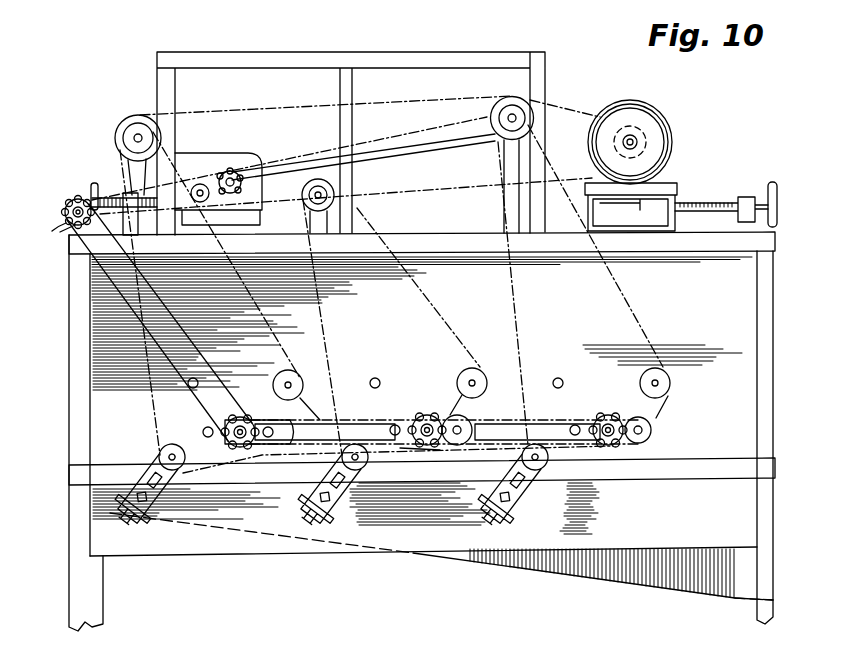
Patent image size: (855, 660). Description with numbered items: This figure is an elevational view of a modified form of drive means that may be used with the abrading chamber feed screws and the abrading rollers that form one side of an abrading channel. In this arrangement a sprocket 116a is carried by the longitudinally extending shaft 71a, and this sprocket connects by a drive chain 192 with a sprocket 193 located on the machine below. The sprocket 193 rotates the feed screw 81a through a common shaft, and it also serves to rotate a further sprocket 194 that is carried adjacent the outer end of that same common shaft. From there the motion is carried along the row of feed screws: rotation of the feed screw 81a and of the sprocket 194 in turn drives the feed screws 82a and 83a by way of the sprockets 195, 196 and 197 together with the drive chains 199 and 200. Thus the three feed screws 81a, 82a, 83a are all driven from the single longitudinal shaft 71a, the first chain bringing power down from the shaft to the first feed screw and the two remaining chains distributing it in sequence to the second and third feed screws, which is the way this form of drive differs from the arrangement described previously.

The longitudinally extending shaft 71a is at (80, 199).
The sprocket 116a is at (70, 229).
The drive chain 192 is at (123, 310).
The sprocket 193 is at (238, 418).
The sprocket 194 is at (230, 443).
The sprocket 195 is at (413, 443).
The sprocket 196 is at (430, 416).
The sprocket 197 is at (614, 416).
The drive chain 199 is at (370, 420).
The drive chain 200 is at (568, 420).
The feed screw 81a is at (250, 453).
The feed screw 82a is at (430, 445).
The feed screw 83a is at (610, 445).